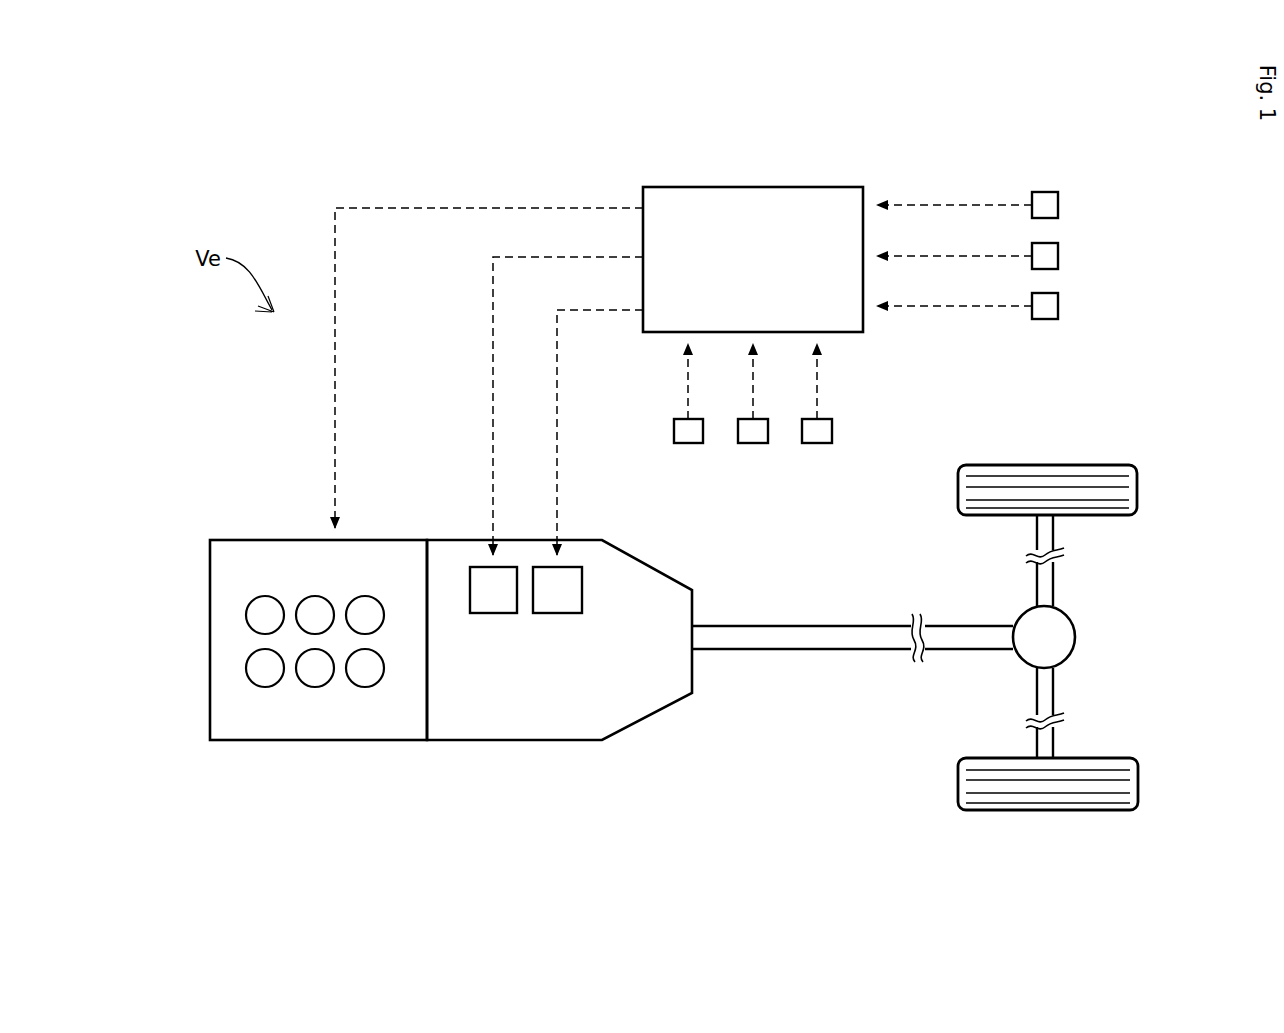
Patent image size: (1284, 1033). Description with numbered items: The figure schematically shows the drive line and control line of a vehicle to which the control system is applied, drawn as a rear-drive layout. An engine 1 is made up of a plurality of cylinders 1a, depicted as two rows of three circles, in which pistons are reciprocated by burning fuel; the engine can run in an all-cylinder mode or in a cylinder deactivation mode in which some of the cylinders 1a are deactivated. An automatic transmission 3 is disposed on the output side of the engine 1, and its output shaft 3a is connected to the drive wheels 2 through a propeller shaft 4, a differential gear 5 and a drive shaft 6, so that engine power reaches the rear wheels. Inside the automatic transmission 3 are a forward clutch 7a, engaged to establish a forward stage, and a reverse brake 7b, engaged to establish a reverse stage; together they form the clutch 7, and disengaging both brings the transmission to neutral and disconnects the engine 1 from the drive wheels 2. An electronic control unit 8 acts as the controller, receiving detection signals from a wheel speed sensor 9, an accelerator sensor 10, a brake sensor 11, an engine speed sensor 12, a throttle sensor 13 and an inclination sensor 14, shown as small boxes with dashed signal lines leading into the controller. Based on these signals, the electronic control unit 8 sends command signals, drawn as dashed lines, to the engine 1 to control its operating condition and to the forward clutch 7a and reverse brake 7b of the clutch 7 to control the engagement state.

The engine 1 is at (316, 728).
The cylinders 1a is at (258, 614).
The drive wheels 2 is at (1130, 484).
The automatic transmission 3 is at (501, 728).
The output shaft 3a is at (700, 637).
The propeller shaft 4 is at (838, 640).
The differential gear 5 is at (1076, 637).
The drive shaft 6 is at (1055, 575).
The clutch 7 is at (593, 666).
The forward clutch 7a is at (490, 605).
The reverse brake 7b is at (556, 605).
The electronic control unit 8 is at (765, 187).
The wheel speed sensor 9 is at (1060, 205).
The accelerator sensor 10 is at (1060, 256).
The brake sensor 11 is at (1060, 306).
The engine speed sensor 12 is at (691, 432).
The throttle sensor 13 is at (756, 432).
The inclination sensor 14 is at (820, 432).